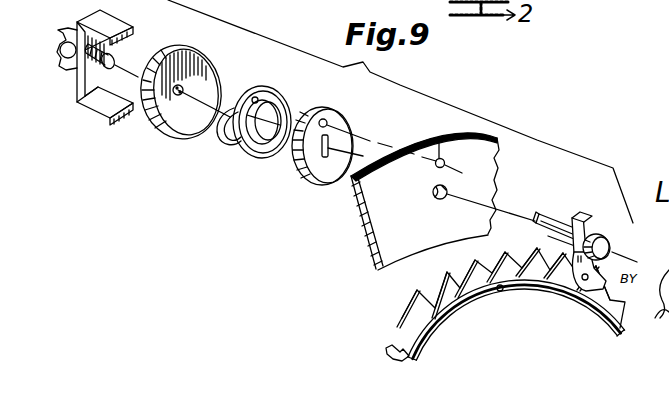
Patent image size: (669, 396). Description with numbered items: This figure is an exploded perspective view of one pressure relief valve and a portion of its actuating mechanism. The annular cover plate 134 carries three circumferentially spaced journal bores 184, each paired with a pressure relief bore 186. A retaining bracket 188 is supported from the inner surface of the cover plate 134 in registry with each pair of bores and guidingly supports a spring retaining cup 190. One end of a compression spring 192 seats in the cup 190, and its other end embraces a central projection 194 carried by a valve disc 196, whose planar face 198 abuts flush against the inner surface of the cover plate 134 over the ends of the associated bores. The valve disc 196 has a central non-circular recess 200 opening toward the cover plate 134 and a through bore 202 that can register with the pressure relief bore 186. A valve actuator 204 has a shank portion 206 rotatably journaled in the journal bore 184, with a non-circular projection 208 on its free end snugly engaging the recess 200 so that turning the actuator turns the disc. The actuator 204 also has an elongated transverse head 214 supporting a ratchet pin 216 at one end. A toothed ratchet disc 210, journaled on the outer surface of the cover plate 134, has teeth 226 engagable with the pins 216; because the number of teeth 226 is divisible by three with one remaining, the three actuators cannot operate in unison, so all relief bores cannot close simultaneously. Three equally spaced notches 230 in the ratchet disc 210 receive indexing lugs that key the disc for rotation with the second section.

The cover plate 134 is at (421, 196).
The journal bore 184 is at (433, 193).
The pressure relief bore 186 is at (437, 140).
The retaining bracket 188 is at (98, 105).
The spring retaining cup 190 is at (173, 135).
The compression spring 192 is at (250, 158).
The central projection 194 is at (287, 153).
The valve disc 196 is at (322, 121).
The planar face 198 is at (302, 138).
The central non-circular recess 200 is at (347, 138).
The through bore 202 is at (313, 117).
The valve actuator 204 is at (578, 216).
The shank portion 206 is at (556, 216).
The non-circular projection 208 is at (474, 239).
The toothed ratchet disc 210 is at (478, 304).
The elongated transverse head 214 is at (597, 231).
The ratchet pin 216 is at (580, 297).
The teeth 226 is at (406, 316).
The notch 230 is at (501, 291).